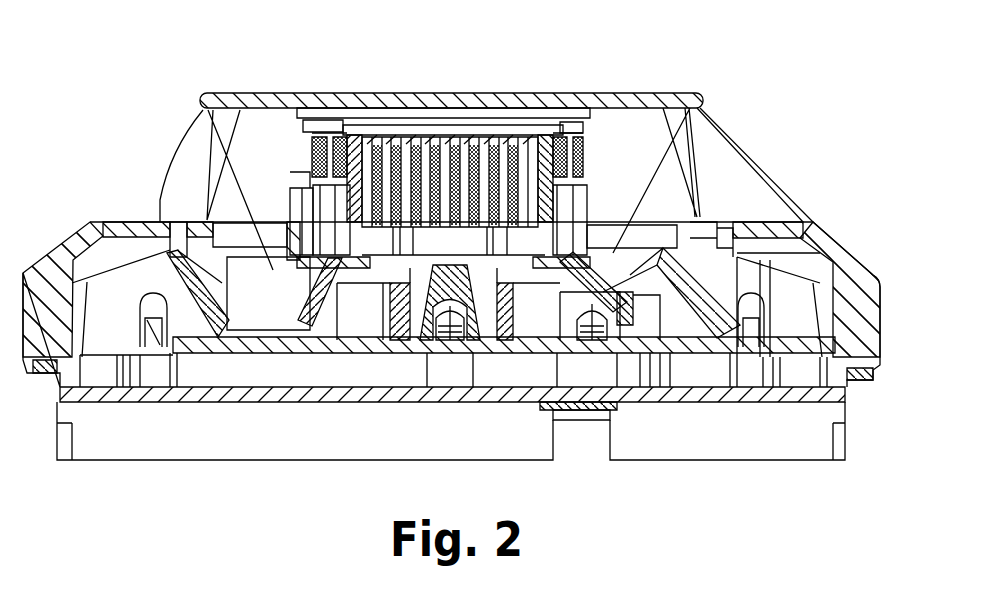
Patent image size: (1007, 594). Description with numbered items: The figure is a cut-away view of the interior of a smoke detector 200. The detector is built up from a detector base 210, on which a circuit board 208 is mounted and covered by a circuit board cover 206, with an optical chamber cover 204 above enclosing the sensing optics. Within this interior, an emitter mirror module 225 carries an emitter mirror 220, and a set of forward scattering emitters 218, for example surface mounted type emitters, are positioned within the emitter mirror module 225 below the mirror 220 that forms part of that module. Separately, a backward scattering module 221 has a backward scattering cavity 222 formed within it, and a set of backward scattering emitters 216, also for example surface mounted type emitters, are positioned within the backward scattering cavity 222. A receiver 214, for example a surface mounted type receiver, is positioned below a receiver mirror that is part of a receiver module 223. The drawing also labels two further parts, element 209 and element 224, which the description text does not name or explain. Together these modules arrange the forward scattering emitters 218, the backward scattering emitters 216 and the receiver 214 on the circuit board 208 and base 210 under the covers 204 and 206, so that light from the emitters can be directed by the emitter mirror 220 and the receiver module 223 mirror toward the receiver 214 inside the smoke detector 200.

The smoke detector 200 is at (168, 48).
The optical chamber cover 204 is at (523, 242).
The circuit board cover 206 is at (167, 265).
The circuit board 208 is at (192, 380).
The coil winding 209 is at (521, 126).
The detector base 210 is at (748, 435).
The receiver 214 is at (320, 380).
The set of backward scattering emitters 216 is at (452, 345).
The set of forward scattering emitters 218 is at (592, 356).
The emitter mirror 220 is at (683, 97).
The backward scattering module 221 is at (387, 200).
The backward scattering cavity 222 is at (450, 262).
The receiver module 223 is at (291, 278).
The magnet 224 is at (337, 255).
The emitter mirror module 225 is at (614, 285).